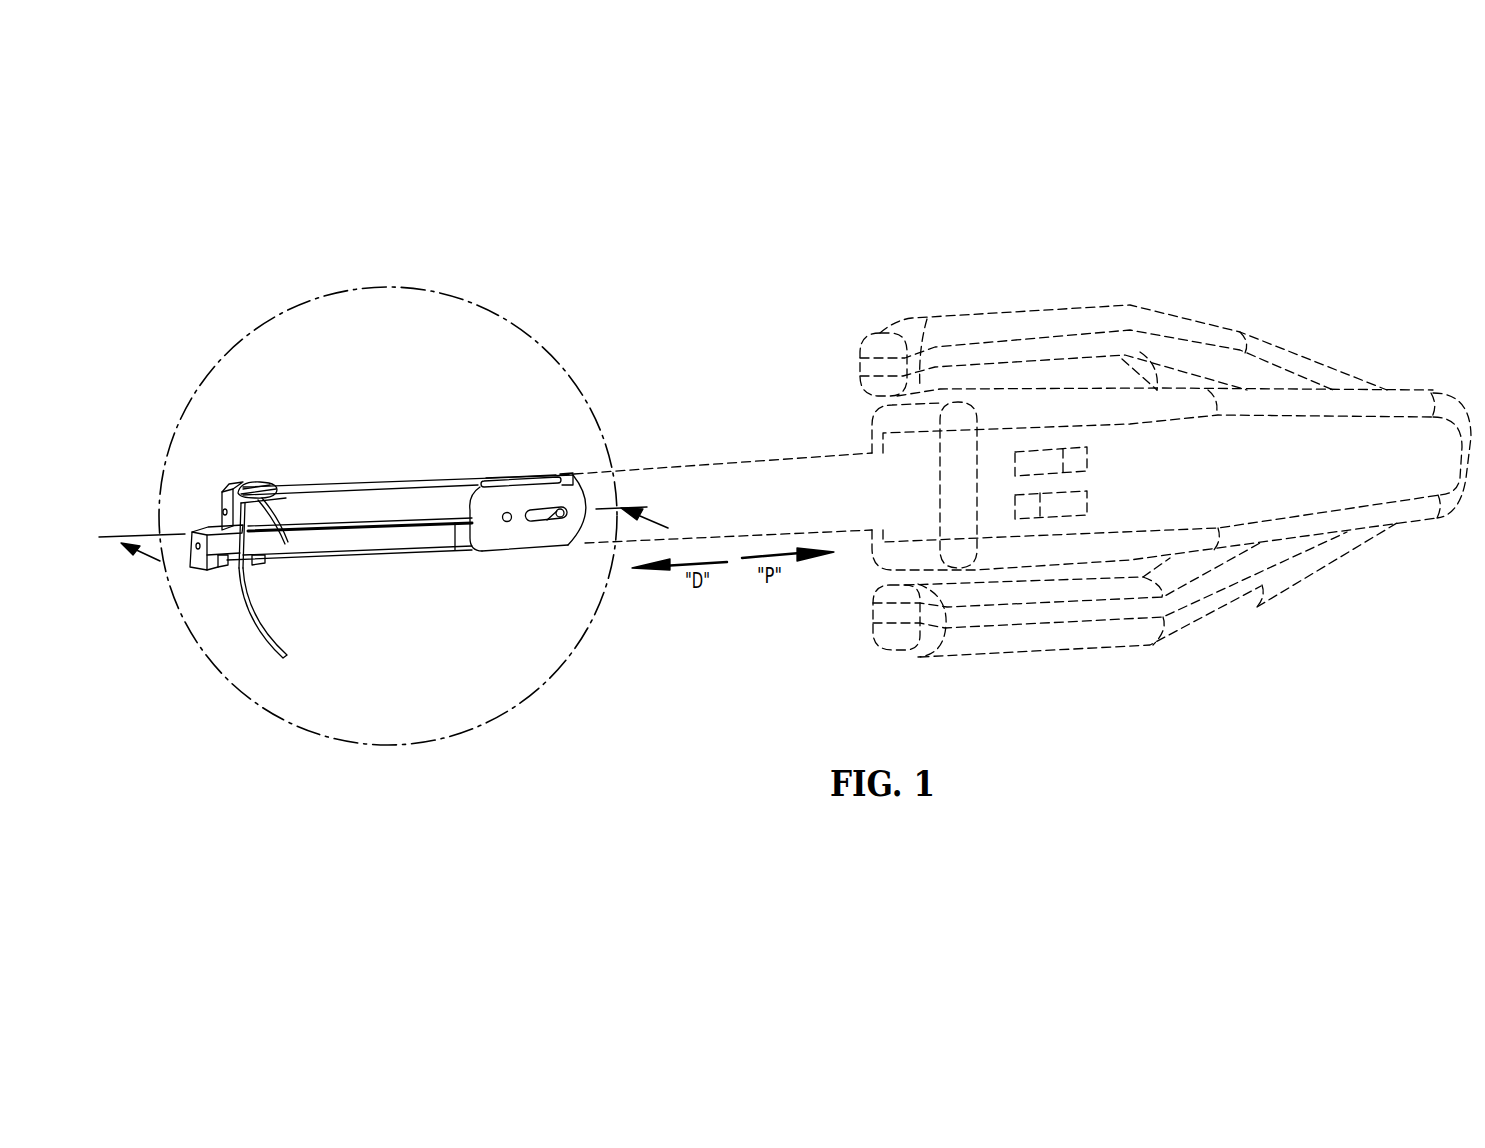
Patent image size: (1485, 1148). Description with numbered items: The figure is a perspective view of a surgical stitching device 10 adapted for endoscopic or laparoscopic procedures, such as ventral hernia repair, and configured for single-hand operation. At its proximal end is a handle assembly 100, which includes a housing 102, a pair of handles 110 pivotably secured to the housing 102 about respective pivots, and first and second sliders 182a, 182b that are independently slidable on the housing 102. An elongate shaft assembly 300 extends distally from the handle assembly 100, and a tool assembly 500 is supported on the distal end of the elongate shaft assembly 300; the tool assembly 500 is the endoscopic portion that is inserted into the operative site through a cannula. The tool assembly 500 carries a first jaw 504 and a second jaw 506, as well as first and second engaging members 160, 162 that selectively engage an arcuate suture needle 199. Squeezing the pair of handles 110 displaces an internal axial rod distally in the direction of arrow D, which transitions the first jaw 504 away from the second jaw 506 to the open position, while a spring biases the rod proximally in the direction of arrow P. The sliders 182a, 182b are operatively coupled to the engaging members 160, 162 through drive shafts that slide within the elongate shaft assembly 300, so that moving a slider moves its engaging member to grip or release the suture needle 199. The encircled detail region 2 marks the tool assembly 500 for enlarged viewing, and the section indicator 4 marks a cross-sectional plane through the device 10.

The detail area of FIG. 2 is at (515, 322).
The section line 4- 4 is at (383, 517).
The surgical stitching device 10 is at (851, 272).
The handle assembly 100 is at (1171, 487).
The housing 102 is at (1430, 450).
The pair of handles 110 is at (1005, 318).
The first slider 182a is at (1027, 517).
The second slider 182b is at (1073, 460).
The elongate shaft assembly 300 is at (735, 460).
The tool assembly 500 is at (376, 487).
The first jaw 504 is at (420, 474).
The second jaw 506 is at (413, 548).
The first engaging member 160 is at (221, 489).
The second engaging member 162 is at (196, 572).
The suture needle 199 is at (280, 642).